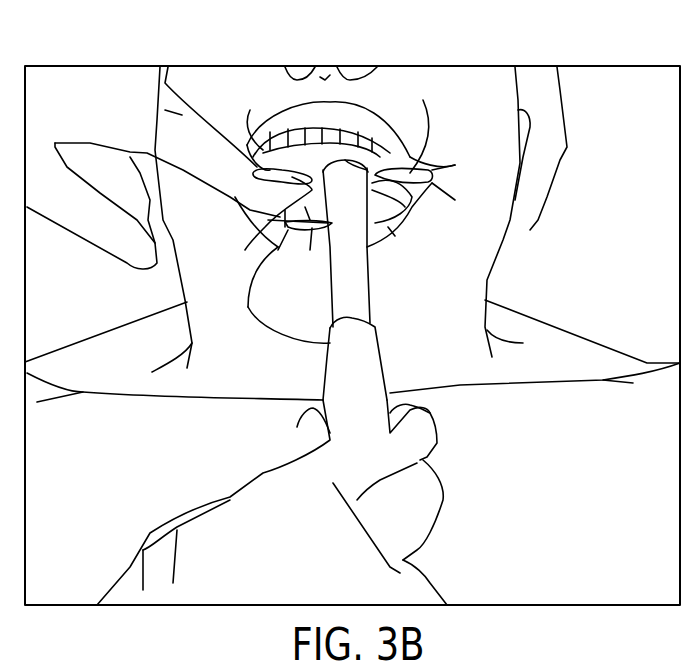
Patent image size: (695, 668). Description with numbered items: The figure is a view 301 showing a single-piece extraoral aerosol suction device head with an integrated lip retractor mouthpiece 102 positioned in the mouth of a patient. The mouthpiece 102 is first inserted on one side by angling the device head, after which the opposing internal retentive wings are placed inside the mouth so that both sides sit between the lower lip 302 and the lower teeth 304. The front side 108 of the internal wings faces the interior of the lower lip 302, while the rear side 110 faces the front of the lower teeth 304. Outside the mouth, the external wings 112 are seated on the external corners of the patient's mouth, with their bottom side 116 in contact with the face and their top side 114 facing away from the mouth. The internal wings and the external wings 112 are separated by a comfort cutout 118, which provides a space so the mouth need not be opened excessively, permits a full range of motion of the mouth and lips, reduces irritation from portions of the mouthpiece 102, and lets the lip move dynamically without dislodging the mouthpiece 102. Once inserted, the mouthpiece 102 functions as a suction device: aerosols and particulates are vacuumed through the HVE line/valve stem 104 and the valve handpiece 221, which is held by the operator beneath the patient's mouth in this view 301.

The view 301 is at (590, 48).
The mouthpiece 102 is at (352, 153).
The HVE line/valve stem 104 is at (360, 290).
The front side 108 is at (248, 307).
The rear side 110 is at (312, 232).
The external wings 112 is at (265, 143).
The top side 114 is at (423, 160).
The bottom side 116 is at (440, 207).
The comfort cutout 118 is at (297, 178).
The valve handpiece 221 is at (338, 392).
The lower lip 302 is at (395, 232).
The lower teeth 304 is at (393, 233).